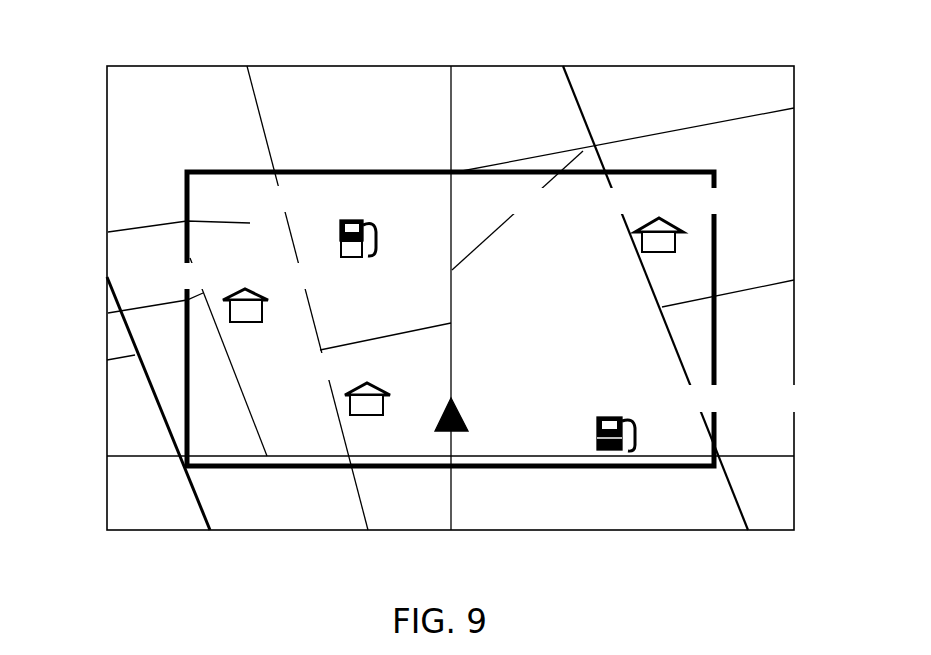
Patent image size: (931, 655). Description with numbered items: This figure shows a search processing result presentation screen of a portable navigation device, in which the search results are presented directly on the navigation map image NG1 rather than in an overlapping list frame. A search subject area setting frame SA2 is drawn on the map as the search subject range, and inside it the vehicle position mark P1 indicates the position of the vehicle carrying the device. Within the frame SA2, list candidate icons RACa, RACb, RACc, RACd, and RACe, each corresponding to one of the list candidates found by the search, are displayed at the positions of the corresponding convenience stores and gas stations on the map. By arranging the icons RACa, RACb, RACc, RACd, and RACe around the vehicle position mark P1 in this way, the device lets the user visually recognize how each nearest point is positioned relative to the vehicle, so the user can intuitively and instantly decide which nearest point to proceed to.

The navigation map image NG1 is at (657, 66).
The search subject area setting frame SA2 is at (303, 172).
The list candidate icon RACa is at (676, 241).
The list candidate icon RACb is at (230, 318).
The list candidate icon RACc is at (340, 238).
The list candidate icon RACd is at (596, 450).
The list candidate icon RACe is at (383, 412).
The vehicle position mark P1 is at (466, 412).